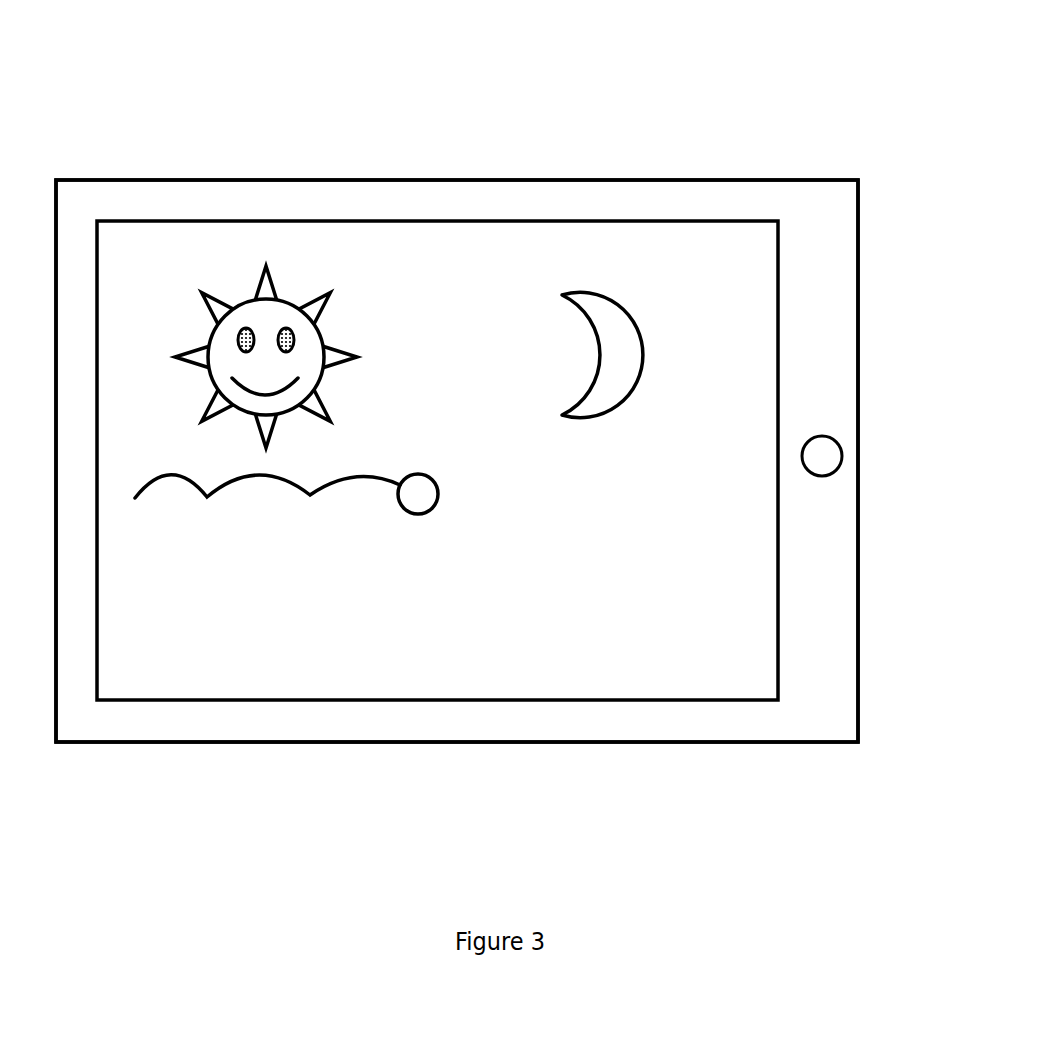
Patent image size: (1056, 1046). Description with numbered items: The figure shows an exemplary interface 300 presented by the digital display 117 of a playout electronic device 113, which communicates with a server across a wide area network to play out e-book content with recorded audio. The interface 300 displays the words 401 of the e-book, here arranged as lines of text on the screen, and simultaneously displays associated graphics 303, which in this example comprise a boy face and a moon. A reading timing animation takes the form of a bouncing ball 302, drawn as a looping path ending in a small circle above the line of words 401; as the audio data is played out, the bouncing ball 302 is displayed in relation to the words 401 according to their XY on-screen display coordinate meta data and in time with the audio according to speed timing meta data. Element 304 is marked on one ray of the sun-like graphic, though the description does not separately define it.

The interface 300 is at (972, 114).
The playout electronic device 113 is at (858, 180).
The digital display 117 is at (778, 318).
The graphics 303 is at (433, 357).
The image component (sun ray) 304 is at (313, 305).
The bouncing ball 302 is at (433, 478).
The words 401 is at (592, 528).